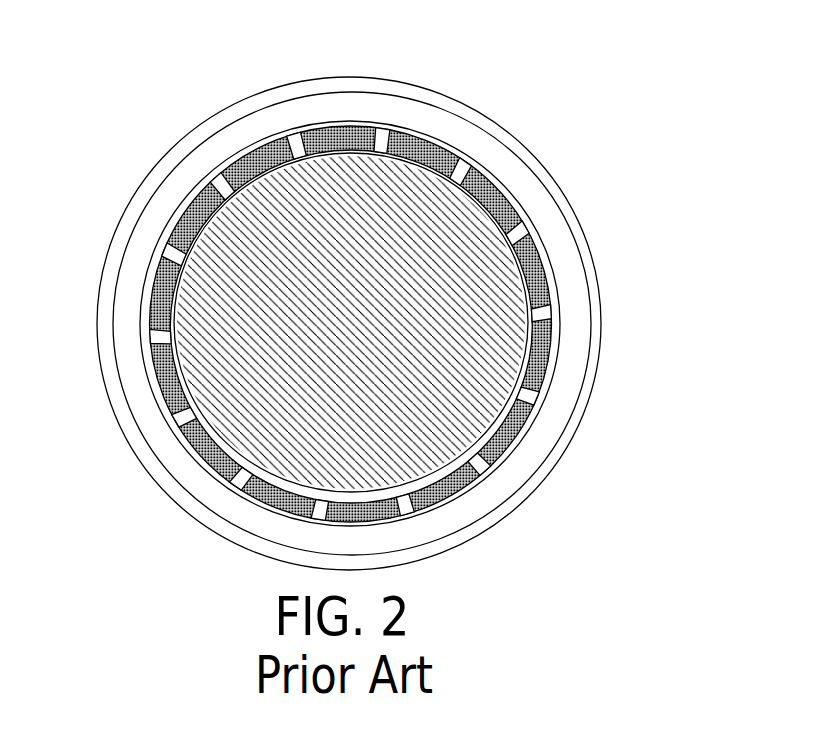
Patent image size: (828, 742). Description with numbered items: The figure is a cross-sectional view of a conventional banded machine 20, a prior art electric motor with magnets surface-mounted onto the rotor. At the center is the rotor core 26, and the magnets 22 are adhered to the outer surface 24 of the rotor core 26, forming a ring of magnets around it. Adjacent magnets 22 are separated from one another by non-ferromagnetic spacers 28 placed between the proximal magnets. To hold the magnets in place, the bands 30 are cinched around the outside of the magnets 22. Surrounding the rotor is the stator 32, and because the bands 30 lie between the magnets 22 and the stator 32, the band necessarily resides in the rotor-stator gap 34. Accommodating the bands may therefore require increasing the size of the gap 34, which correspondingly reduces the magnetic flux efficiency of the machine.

The banded machine 20 is at (621, 156).
The magnets 22 is at (253, 155).
The outer surface 24 is at (353, 155).
The rotor core 26 is at (503, 320).
The non-ferromagnetic spacers 28 is at (175, 253).
The bands 30 is at (475, 157).
The stator 32 is at (470, 113).
The rotor-stator gap 34 is at (523, 182).